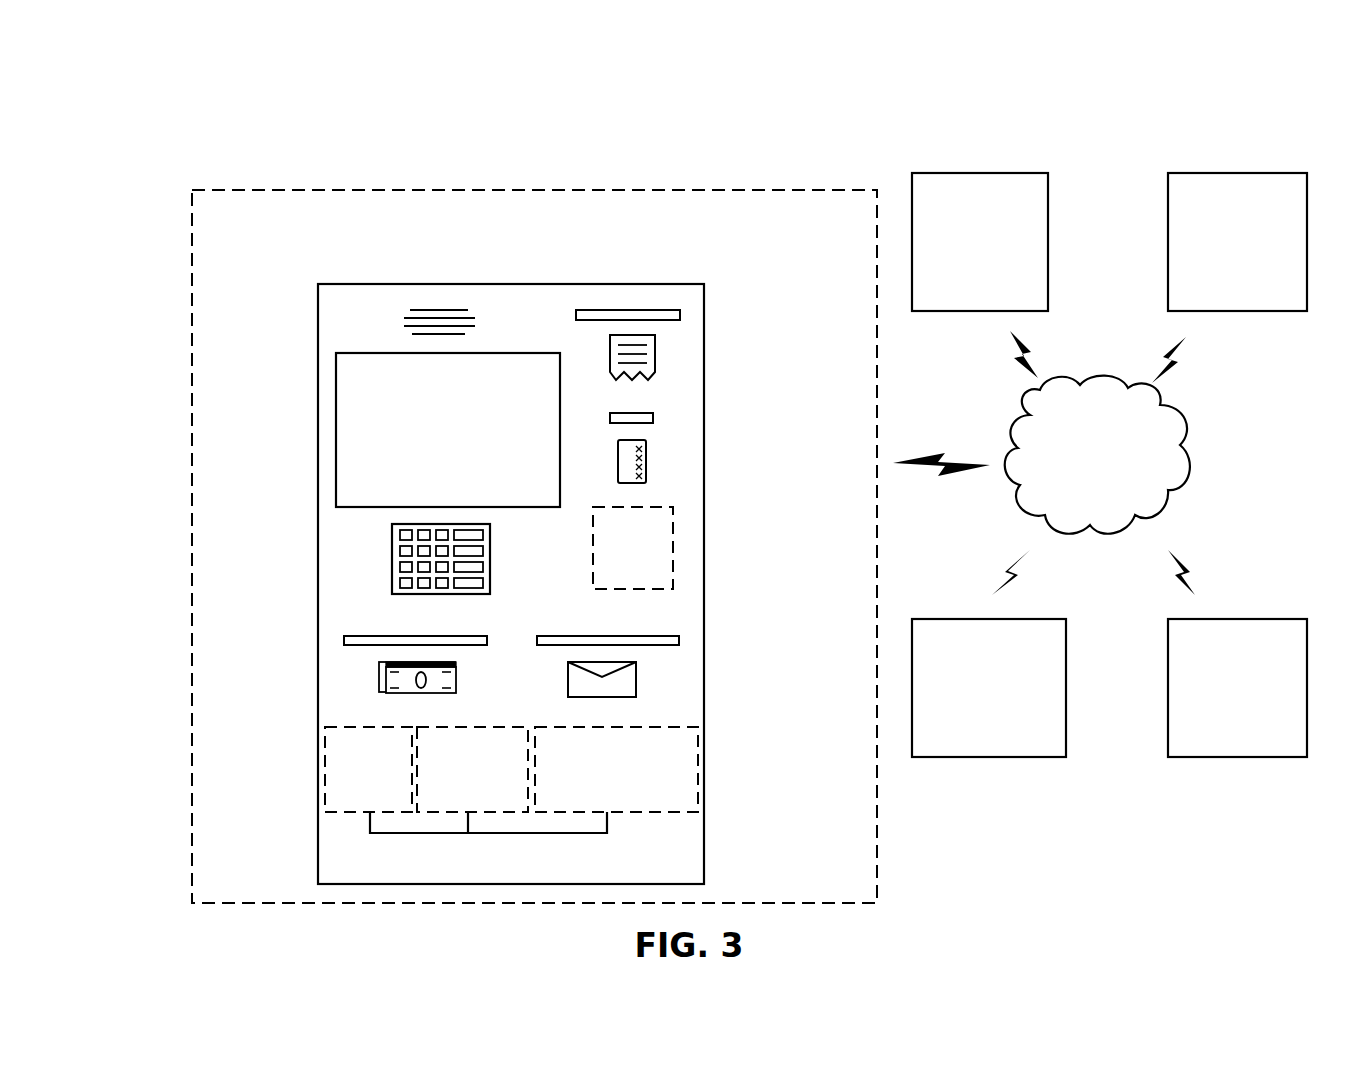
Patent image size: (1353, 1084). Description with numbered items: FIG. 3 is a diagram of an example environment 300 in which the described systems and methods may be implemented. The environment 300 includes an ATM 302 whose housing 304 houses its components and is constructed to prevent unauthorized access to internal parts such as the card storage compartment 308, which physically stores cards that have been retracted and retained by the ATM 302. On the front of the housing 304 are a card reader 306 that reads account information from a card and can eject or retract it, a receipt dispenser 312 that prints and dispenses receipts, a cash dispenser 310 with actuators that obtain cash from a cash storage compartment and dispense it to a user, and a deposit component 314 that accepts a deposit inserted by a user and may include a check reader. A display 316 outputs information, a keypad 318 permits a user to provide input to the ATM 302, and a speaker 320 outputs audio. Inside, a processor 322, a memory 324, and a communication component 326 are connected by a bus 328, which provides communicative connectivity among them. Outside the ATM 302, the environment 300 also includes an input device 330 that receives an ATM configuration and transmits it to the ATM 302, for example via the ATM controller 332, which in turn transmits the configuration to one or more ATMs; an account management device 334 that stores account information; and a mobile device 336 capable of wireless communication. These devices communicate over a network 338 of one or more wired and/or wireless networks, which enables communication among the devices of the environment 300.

The environment 300 is at (206, 66).
The ATM 302 is at (515, 190).
The housing 304 is at (330, 283).
The card reader 306 is at (653, 418).
The card storage compartment 308 is at (673, 527).
The cash dispenser 310 is at (344, 639).
The receipt dispenser 312 is at (680, 316).
The deposit component 314 is at (679, 641).
The display 316 is at (448, 430).
The keypad 318 is at (392, 544).
The speaker 320 is at (446, 303).
The processor 322 is at (472, 769).
The memory 324 is at (368, 769).
The communication component 326 is at (616, 769).
The bus 328 is at (500, 833).
The input device 330 is at (980, 242).
The ATM controller 332 is at (1237, 242).
The account management device 334 is at (989, 688).
The mobile device 336 is at (1237, 688).
The network 338 is at (1044, 463).